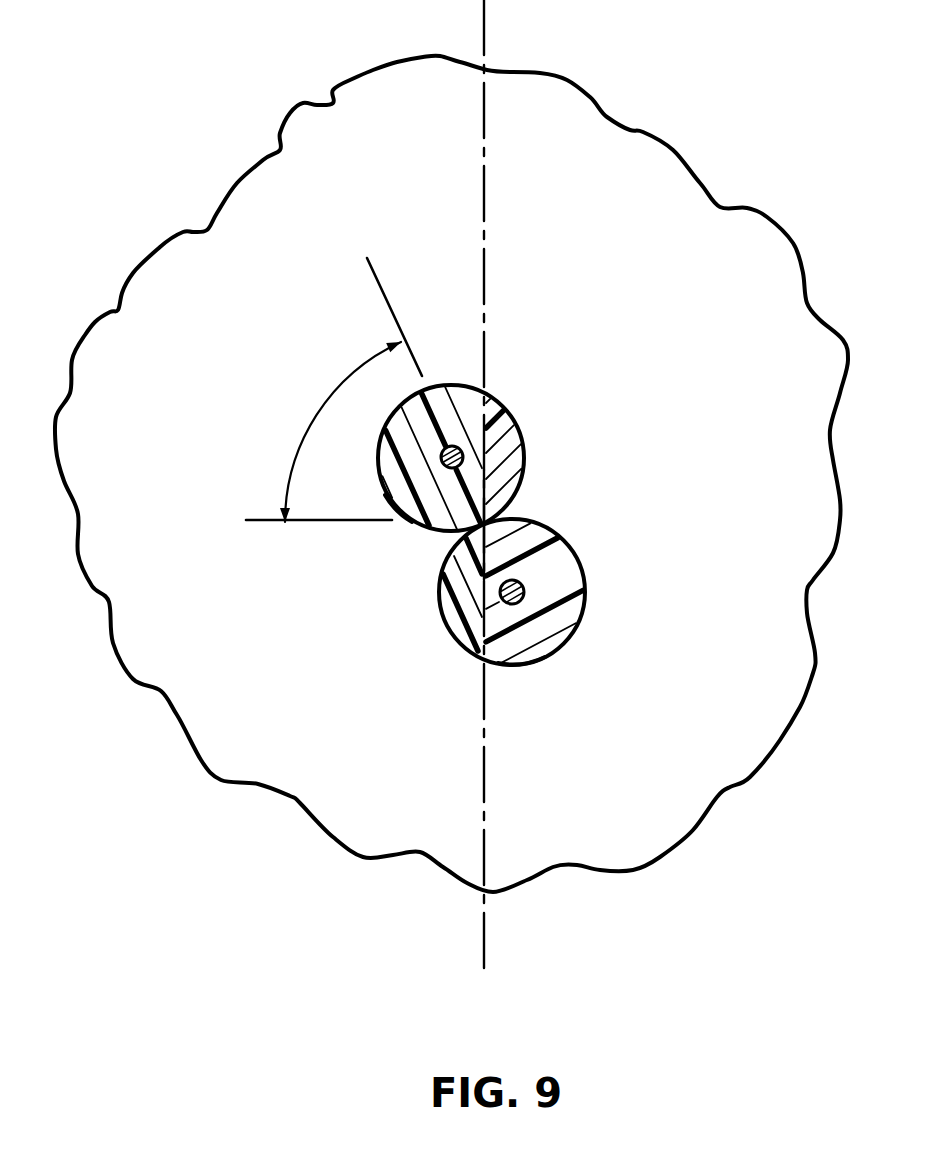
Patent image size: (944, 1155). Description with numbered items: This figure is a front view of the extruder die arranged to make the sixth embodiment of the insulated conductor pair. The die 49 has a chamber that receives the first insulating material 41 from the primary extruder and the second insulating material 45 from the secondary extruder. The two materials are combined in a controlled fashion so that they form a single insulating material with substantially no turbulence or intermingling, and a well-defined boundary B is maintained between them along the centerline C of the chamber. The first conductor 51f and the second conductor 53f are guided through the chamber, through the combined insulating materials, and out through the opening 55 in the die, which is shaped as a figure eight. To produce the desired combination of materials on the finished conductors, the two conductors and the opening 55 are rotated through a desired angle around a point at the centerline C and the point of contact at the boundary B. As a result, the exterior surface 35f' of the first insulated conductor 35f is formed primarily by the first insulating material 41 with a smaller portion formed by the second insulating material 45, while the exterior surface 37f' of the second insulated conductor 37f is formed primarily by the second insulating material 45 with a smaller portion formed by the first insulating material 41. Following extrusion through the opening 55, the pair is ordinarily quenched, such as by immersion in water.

The die 49 is at (560, 116).
The second insulating material 45 is at (448, 407).
The second insulated conductor 37f is at (444, 443).
The opening 55 is at (488, 432).
The second conductor 53f is at (443, 468).
The exterior surface of the second insulated conductor 37f' is at (358, 536).
The boundary B is at (500, 490).
The first insulating material 41 is at (553, 557).
The first conductor 51f is at (524, 589).
The first insulated conductor 35f is at (546, 617).
The exterior surface of the first insulated conductor 35f' is at (500, 629).
The centerline C is at (488, 939).